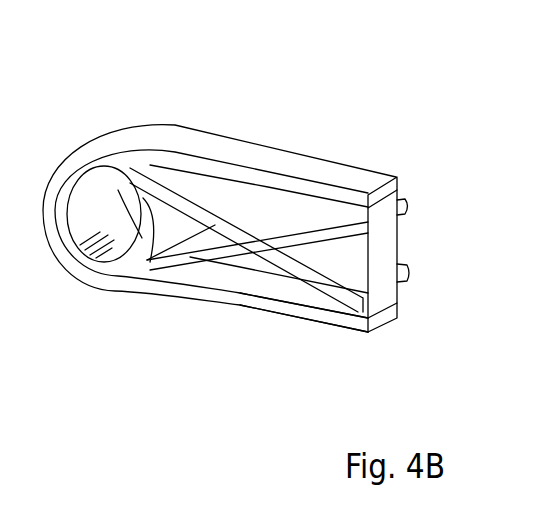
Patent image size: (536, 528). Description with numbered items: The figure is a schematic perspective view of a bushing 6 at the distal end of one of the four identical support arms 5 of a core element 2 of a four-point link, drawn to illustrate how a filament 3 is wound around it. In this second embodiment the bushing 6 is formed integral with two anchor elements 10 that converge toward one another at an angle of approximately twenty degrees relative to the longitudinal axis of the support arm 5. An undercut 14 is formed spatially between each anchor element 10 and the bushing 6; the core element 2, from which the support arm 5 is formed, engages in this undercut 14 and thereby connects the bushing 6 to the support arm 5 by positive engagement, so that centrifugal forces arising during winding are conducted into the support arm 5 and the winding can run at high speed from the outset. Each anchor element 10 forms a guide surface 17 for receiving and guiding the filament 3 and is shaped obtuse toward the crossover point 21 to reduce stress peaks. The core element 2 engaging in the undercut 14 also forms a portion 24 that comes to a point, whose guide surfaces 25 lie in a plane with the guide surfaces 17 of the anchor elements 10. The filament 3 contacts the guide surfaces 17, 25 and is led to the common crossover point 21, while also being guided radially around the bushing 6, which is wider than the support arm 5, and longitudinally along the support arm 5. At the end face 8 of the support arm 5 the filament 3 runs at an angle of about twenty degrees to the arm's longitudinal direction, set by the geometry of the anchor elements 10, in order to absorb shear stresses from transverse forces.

The core element 2 is at (302, 287).
The filament 3 is at (356, 200).
The support arm 5 is at (327, 132).
The bushing 6 is at (72, 185).
The end face 8 is at (327, 215).
The anchor element 10 is at (176, 198).
The undercut 14 is at (160, 193).
The guide surface 17 is at (195, 213).
The crossover point 21 is at (263, 270).
The portion 24 is at (233, 215).
The guide surface 25 is at (252, 225).